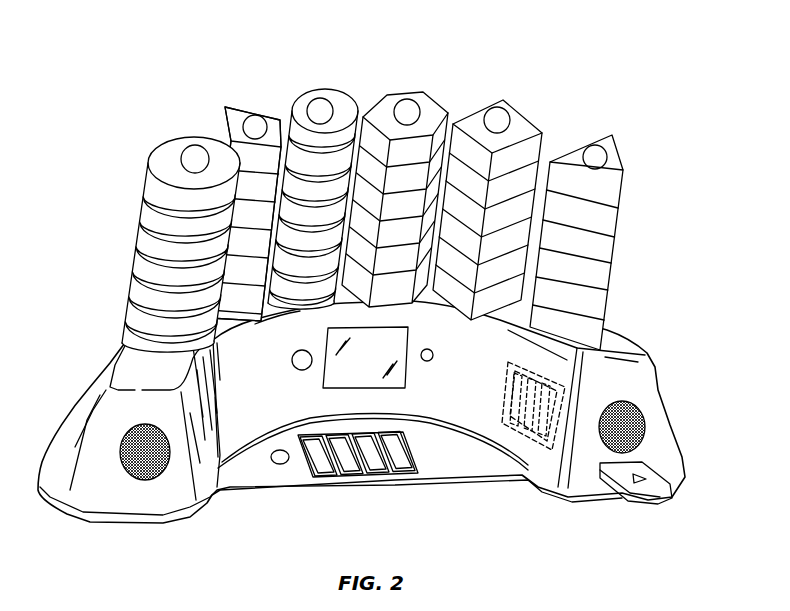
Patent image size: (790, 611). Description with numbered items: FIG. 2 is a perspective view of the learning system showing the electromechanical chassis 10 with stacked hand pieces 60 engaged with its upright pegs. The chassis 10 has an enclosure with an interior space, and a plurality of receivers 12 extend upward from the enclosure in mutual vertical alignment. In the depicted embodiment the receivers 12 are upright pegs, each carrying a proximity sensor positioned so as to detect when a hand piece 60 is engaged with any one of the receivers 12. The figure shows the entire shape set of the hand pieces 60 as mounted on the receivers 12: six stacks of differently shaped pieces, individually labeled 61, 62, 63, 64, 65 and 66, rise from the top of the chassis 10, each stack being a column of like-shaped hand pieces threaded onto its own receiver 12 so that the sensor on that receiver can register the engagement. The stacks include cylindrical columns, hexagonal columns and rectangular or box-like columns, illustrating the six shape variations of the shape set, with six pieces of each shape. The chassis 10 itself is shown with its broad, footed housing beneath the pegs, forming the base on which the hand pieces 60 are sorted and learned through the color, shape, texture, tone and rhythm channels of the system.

The electromechanical chassis 10 is at (668, 402).
The receivers 12 is at (477, 112).
The hand pieces 60 is at (421, 52).
The hexagonal battery 61 is at (392, 93).
The cylindrical battery 62 is at (167, 147).
The cylindrical battery 63 is at (317, 90).
The rectangular battery 64 is at (502, 190).
The rectangular battery 65 is at (232, 105).
The rectangular battery 66 is at (615, 167).